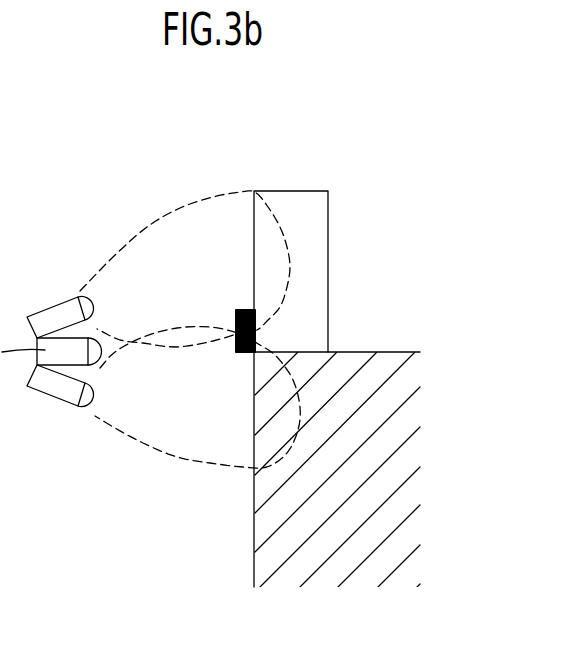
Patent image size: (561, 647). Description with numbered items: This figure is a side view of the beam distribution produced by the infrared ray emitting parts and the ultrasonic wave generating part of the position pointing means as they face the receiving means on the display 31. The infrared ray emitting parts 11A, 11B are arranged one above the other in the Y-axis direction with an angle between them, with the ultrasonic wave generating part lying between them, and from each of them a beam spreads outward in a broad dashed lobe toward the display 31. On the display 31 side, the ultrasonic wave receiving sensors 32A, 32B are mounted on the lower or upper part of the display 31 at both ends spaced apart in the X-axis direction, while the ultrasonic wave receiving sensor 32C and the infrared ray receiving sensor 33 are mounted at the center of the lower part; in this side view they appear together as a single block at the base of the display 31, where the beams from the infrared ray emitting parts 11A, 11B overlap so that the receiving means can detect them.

The infrared ray emitting part 11A is at (45, 318).
The infrared ray emitting part 11B is at (47, 387).
The display 31 is at (318, 268).
The ultrasonic wave receiving sensor 32A is at (162, 429).
The ultrasonic wave receiving sensor 32B is at (187, 429).
The ultrasonic wave receiving sensor 32C is at (211, 429).
The infrared ray receiving sensor 33 is at (240, 353).